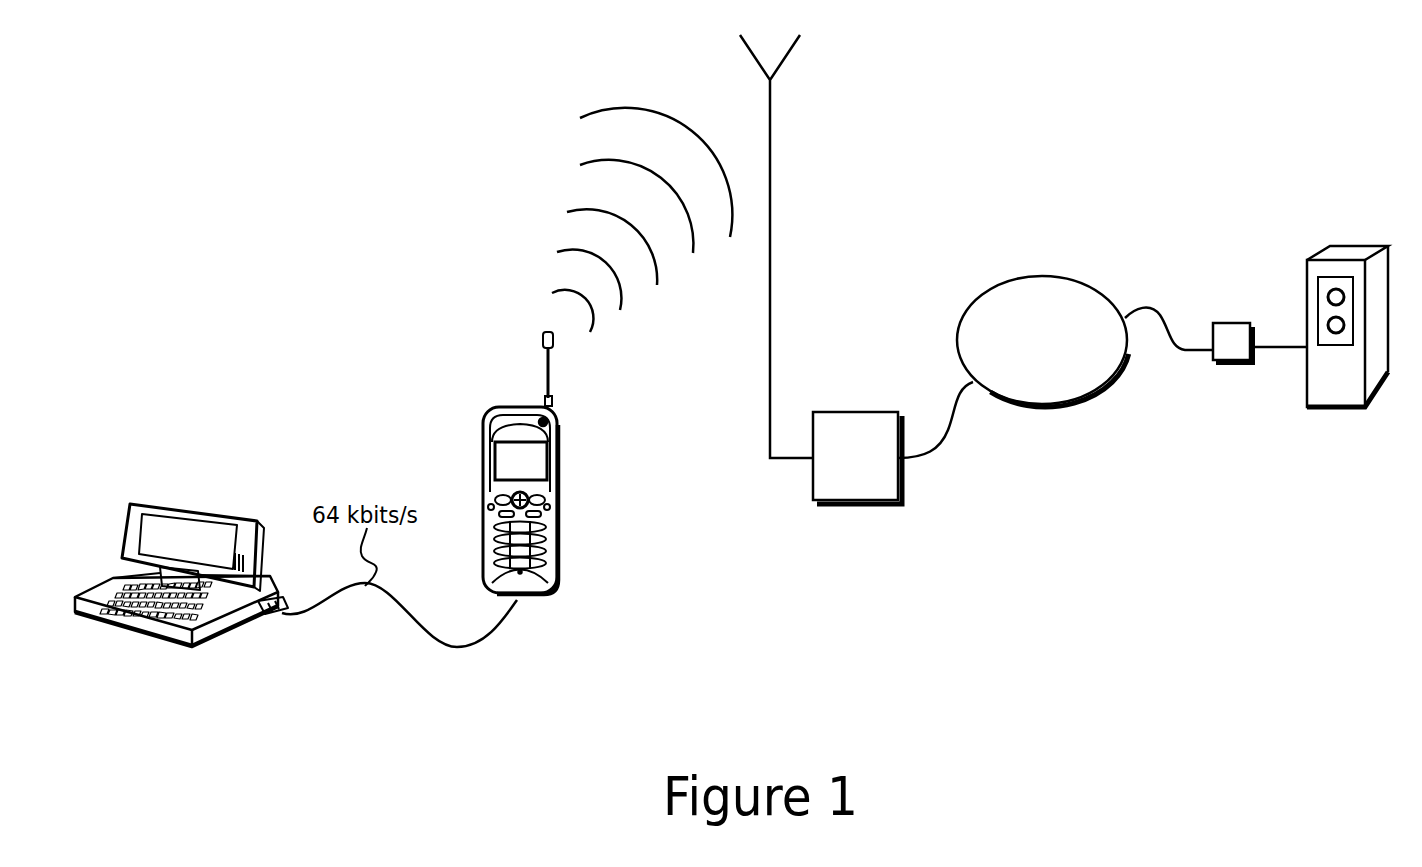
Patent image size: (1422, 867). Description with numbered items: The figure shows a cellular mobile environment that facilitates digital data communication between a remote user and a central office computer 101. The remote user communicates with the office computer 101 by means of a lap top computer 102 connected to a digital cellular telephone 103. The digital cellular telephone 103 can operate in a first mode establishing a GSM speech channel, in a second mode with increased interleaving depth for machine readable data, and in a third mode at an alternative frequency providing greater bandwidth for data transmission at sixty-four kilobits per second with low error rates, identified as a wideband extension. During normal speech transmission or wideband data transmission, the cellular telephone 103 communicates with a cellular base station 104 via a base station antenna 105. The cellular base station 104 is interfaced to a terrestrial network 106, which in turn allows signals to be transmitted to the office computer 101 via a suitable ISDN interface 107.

The central office computer 101 is at (1345, 256).
The lap top computer 102 is at (190, 528).
The digital cellular telephone 103 is at (530, 460).
The cellular base station 104 is at (865, 428).
The base station antenna 105 is at (770, 163).
The terrestrial network 106 is at (1050, 297).
The ISDN interface 107 is at (1228, 334).